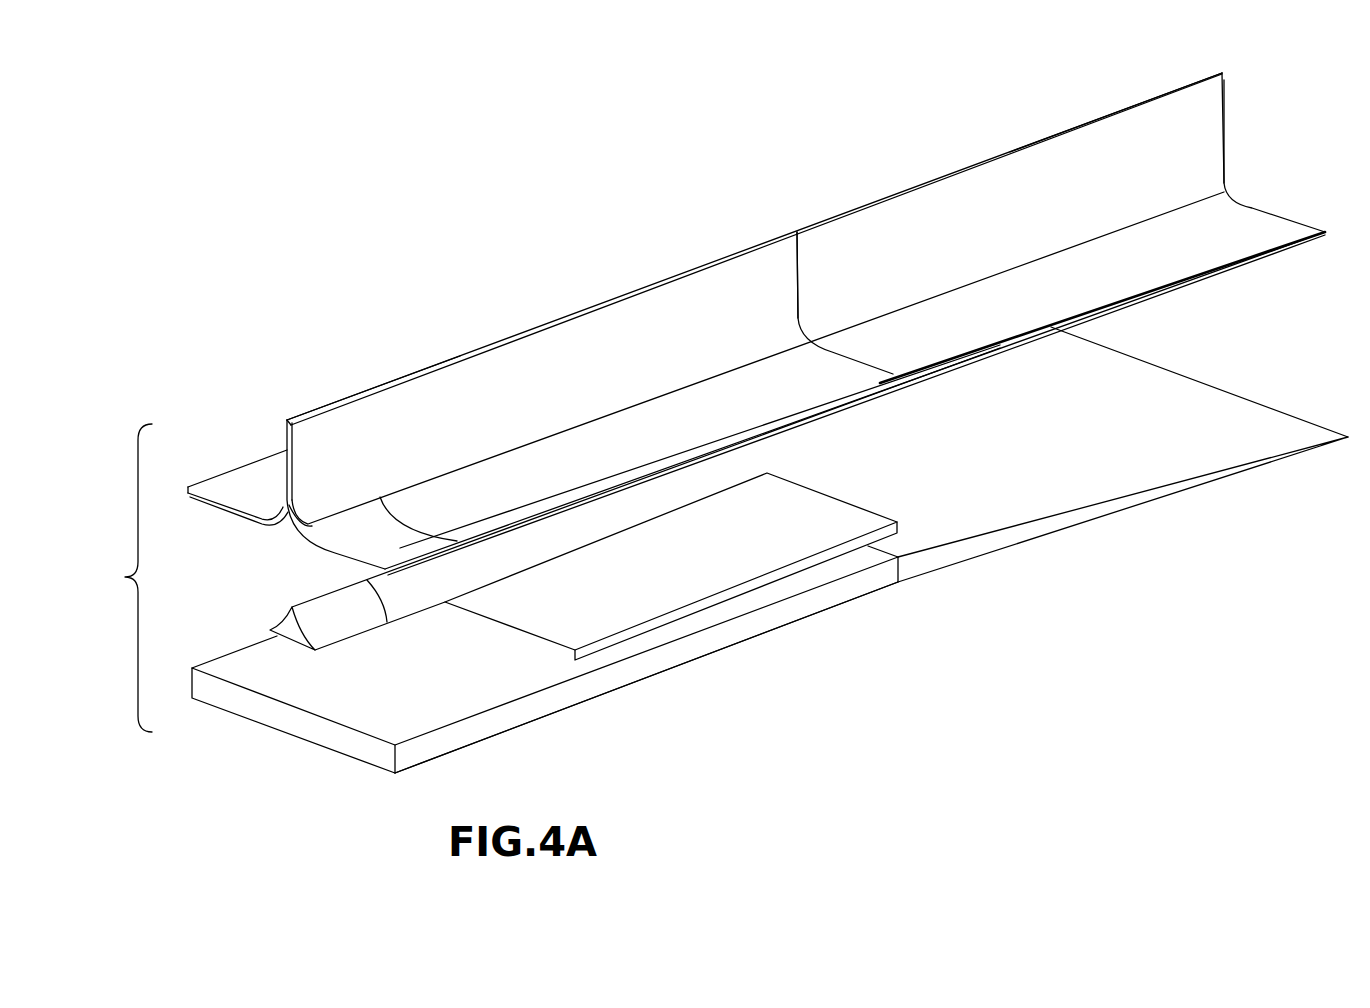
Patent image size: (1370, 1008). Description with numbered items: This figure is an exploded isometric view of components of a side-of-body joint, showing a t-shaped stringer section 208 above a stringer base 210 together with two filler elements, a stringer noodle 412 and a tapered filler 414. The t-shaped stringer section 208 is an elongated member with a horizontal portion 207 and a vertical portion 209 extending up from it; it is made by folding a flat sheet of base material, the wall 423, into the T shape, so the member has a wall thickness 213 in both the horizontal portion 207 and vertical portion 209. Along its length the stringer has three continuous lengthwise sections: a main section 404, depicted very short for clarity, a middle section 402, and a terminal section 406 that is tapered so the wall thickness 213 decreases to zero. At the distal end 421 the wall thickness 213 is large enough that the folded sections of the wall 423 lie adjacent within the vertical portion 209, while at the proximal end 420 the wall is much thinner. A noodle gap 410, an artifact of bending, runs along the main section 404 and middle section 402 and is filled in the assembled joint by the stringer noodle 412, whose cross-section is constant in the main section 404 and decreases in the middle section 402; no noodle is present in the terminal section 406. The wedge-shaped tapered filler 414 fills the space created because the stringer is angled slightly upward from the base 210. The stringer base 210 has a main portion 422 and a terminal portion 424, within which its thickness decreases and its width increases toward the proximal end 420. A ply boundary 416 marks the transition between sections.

The horizontal portion 207 is at (1170, 283).
The t-shaped stringer section 208 is at (460, 356).
The vertical portion 209 is at (1012, 152).
The stringer base 210 is at (500, 727).
The wall thickness 213 is at (287, 413).
The middle section 402 is at (660, 280).
The main section 404 is at (320, 409).
The terminal section 406 is at (852, 217).
The noodle gap 410 is at (293, 520).
The stringer noodle 412 is at (290, 612).
The tapered filler 414 is at (602, 638).
The ply boundary 416 is at (797, 232).
The proximal end 420 is at (1225, 108).
The distal end 421 is at (283, 477).
The main portion 422 is at (790, 625).
The wall 423 is at (212, 507).
The terminal portion 424 is at (1017, 547).